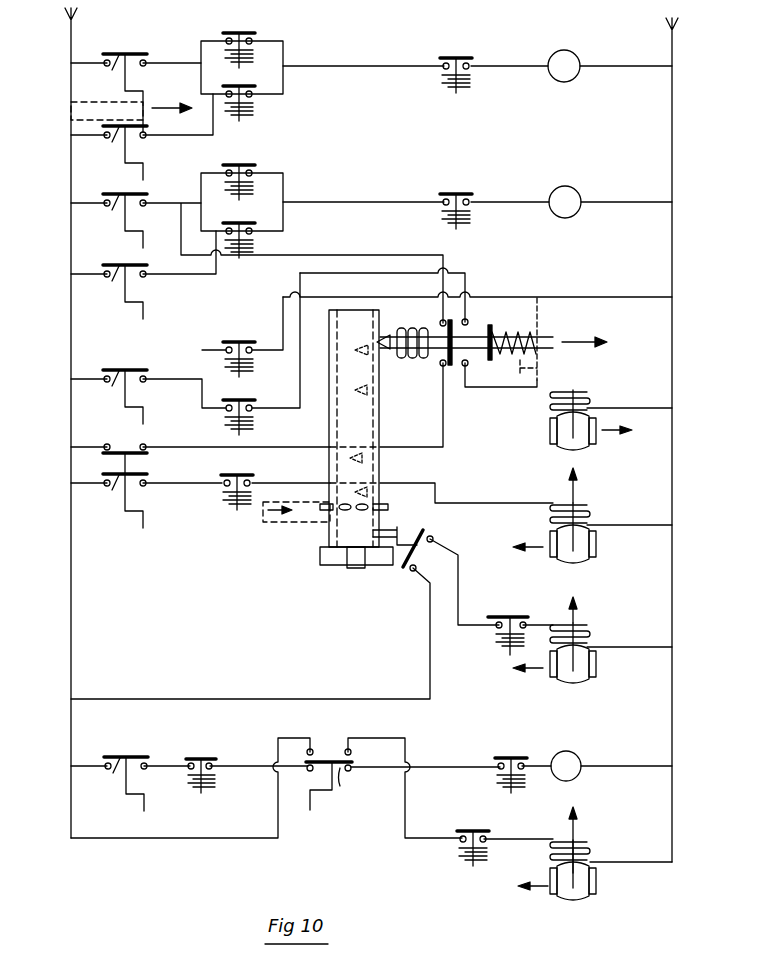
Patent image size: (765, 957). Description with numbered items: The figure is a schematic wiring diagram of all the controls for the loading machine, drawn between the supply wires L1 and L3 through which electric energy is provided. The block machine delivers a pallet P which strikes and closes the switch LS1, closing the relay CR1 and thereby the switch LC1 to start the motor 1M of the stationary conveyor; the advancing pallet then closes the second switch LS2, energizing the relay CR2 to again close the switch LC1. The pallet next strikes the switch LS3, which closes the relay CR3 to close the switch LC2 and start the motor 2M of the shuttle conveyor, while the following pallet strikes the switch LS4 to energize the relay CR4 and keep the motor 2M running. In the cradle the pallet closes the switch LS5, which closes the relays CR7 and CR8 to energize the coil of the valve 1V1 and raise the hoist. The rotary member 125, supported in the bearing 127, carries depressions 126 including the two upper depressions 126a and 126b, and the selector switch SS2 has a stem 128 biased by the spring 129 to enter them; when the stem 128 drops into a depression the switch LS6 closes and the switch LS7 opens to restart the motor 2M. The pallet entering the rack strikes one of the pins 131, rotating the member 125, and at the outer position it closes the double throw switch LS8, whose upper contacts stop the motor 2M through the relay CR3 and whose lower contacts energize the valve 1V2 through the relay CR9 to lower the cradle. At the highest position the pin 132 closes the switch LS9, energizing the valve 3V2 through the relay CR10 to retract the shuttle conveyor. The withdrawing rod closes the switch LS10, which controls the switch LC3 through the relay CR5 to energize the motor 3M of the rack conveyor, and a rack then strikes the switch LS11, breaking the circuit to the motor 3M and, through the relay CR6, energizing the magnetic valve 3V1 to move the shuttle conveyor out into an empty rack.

The wire L1 is at (71, 48).
The wire L3 is at (679, 40).
The switch LS1 is at (115, 93).
The second switch LS2 is at (113, 153).
The switch LS3 is at (112, 221).
The switch LS4 is at (112, 292).
The switch LS5 is at (112, 397).
The selector switch LS6 is at (441, 366).
The switch LS7 is at (468, 325).
The double throw switch LS8 is at (111, 486).
The switch LS9 is at (432, 539).
The switch LS10 is at (111, 784).
The switch LS11 is at (346, 779).
The relay CR1 is at (250, 34).
The relay CR2 is at (252, 86).
The relay CR3 is at (254, 166).
The relay CR4 is at (252, 224).
The relay CR5 is at (199, 758).
The relay CR6 is at (484, 831).
The relay CR7 is at (234, 342).
The relay CR8 is at (250, 400).
The relay CR9 is at (251, 476).
The relay CR10 is at (487, 616).
The switch LC1 is at (462, 58).
The switch LC2 is at (456, 194).
The switch LC3 is at (500, 758).
The motor 1M is at (576, 56).
The motor 2M is at (577, 192).
The motor 3M is at (578, 757).
The pallet P is at (68, 108).
The rotary member 125 is at (380, 470).
The depressions 126 is at (364, 428).
The upper depression 126a is at (378, 338).
The second depression from the top 126b is at (365, 356).
The bearing 127 is at (320, 561).
The stem 128 is at (584, 333).
The spring 129 is at (503, 356).
The pins 131 is at (390, 505).
The pin 132 is at (400, 537).
The selector switch SS2 is at (540, 328).
The valve 1V1 is at (590, 446).
The magnetically operated valve 1V2 is at (590, 560).
The magnetic valve 3V1 is at (590, 900).
The magnetically operated valve 3V2 is at (590, 684).